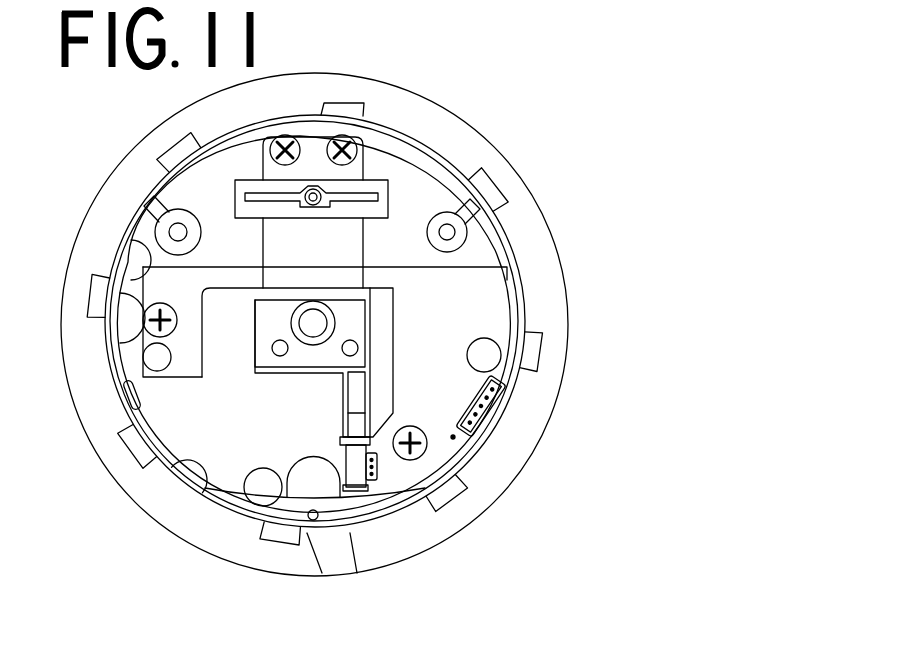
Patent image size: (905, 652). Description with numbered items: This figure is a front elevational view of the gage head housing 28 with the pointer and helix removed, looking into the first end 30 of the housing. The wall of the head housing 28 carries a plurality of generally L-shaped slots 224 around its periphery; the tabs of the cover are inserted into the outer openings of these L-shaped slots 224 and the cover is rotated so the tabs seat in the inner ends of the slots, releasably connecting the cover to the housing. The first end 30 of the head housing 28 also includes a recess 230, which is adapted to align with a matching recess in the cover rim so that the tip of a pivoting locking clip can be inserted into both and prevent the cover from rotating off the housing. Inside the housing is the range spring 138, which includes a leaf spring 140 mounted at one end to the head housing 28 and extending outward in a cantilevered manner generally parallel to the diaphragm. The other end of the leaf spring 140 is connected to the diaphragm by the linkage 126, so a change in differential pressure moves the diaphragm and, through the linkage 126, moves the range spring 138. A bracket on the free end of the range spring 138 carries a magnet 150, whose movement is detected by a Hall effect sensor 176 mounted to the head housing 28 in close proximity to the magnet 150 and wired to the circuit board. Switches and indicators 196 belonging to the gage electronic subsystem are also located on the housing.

The gage head housing 28 is at (585, 88).
The first end 30 is at (530, 240).
The L-shaped slots 224 is at (525, 355).
The recess 230 is at (338, 557).
The range spring 138 is at (283, 240).
The leaf spring 140 is at (348, 242).
The linkage 126 is at (310, 320).
The switches and indicators 196 is at (343, 403).
The magnet 150 is at (353, 482).
The Hall effect sensor 176 is at (378, 470).